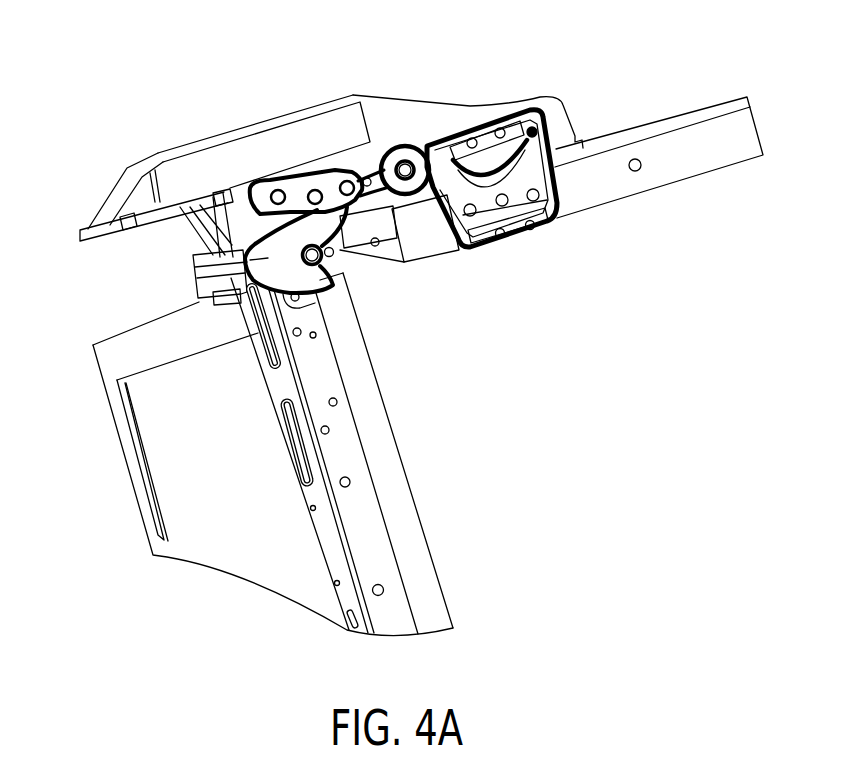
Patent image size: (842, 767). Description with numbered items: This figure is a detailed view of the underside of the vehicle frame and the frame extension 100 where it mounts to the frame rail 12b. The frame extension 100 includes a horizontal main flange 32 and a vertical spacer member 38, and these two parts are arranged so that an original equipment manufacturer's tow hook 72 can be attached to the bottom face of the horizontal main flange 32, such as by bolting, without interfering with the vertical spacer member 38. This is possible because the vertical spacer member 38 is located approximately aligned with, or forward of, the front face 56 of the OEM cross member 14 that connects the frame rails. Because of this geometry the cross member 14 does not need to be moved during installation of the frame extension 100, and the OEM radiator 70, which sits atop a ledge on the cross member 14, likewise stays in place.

The frame extension 100 is at (278, 98).
The horizontal main flange 32 is at (417, 117).
The frame rail 12b is at (685, 120).
The vertical spacer member 38 is at (226, 192).
The OEM tow hook 72 is at (199, 285).
The cross member 14 is at (280, 393).
The radiator 70 is at (160, 533).
The front face of the cross member 56 is at (326, 549).